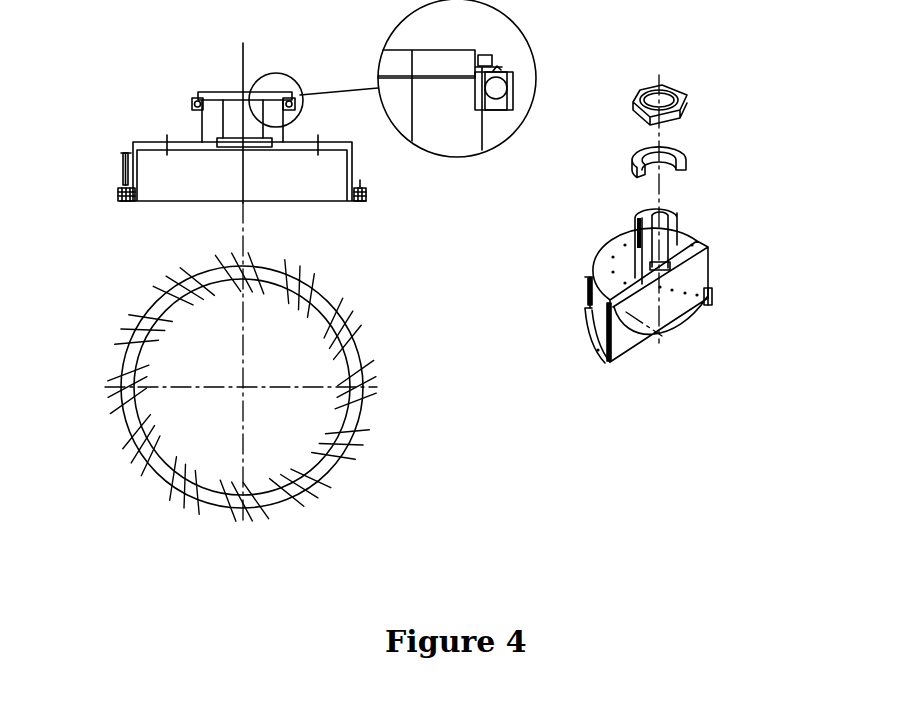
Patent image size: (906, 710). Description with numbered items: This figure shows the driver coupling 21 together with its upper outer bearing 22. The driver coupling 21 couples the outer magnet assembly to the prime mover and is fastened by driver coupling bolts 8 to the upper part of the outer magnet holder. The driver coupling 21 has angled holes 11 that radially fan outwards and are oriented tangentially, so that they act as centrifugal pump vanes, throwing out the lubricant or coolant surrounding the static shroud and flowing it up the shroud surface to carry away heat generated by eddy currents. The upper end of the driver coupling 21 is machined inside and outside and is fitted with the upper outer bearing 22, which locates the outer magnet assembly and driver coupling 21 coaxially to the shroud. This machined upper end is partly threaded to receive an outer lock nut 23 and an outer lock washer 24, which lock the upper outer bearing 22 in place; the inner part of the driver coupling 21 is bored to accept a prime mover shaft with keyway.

The driver coupling 21 is at (355, 163).
The upper outer bearing 22 is at (197, 97).
The outer lock nut 23 is at (493, 55).
The outer lock washer 24 is at (497, 67).
The driver coupling bolts 8 is at (123, 167).
The angled holes 11 is at (348, 328).